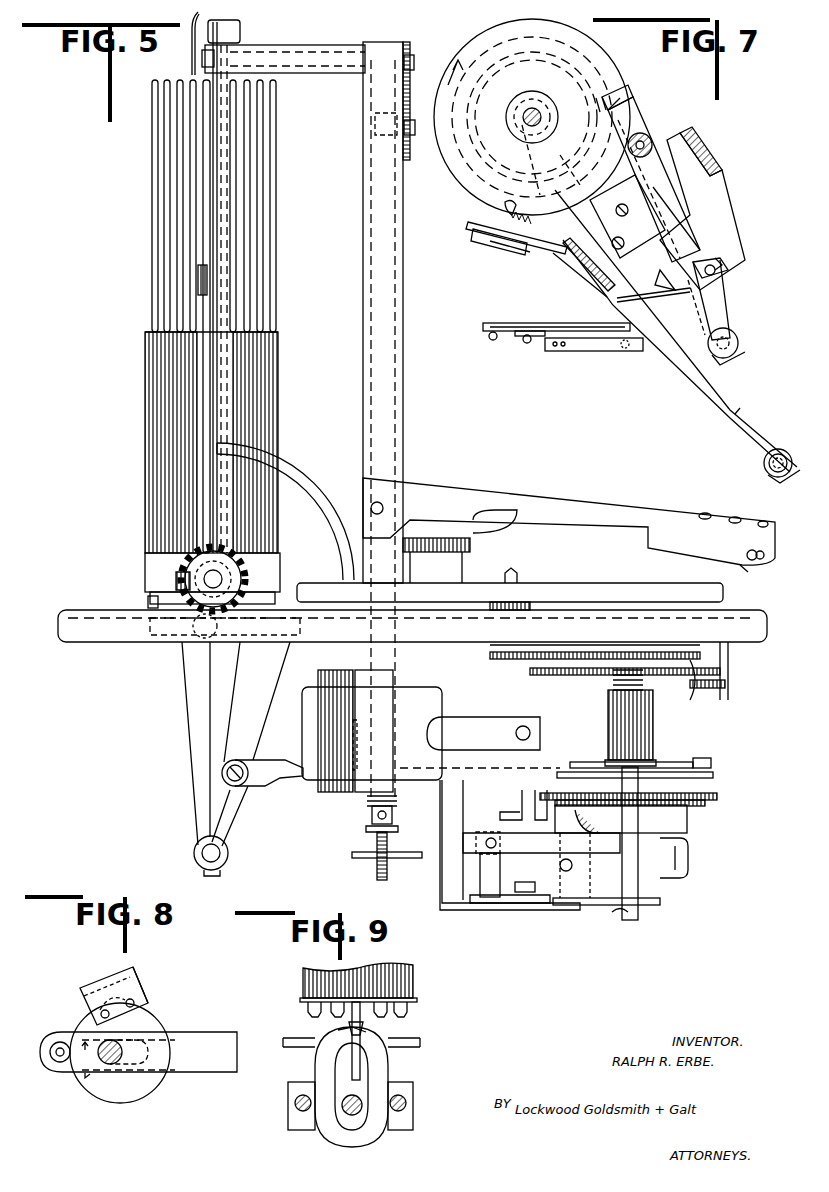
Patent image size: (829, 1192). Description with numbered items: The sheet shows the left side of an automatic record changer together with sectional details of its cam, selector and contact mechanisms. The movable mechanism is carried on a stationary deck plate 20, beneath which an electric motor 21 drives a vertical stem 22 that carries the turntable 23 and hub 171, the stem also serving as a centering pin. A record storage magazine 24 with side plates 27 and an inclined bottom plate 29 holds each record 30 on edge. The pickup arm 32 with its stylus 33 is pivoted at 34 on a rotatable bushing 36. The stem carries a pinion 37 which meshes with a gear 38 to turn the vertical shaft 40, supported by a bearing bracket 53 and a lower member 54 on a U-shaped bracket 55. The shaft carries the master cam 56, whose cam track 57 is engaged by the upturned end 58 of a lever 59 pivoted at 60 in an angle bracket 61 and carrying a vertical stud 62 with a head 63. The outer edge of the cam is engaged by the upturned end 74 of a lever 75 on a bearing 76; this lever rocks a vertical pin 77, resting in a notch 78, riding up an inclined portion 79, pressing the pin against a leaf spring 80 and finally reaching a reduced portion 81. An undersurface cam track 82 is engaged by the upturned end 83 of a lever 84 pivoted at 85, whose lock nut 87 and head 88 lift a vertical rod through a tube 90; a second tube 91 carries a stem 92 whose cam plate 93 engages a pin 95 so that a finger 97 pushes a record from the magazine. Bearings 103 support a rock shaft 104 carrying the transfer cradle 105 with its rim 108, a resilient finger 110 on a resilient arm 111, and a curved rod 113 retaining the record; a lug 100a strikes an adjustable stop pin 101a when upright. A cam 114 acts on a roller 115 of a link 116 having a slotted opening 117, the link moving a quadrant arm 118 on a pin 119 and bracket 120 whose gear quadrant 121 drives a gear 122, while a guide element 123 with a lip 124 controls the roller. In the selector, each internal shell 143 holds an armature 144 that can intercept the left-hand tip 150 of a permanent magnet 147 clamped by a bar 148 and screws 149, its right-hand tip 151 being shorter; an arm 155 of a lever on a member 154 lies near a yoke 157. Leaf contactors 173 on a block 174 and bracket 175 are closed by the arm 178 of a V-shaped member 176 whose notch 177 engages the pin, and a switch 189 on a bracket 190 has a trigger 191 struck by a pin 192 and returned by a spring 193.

In FIG. 5, the deck plate 20 is at (762, 626).
In FIG. 5, the electric motor 21 is at (302, 720).
In FIG. 5, the vertical stem 22 is at (518, 573).
In FIG. 5, the turntable 23 is at (724, 594).
In FIG. 5, the record storage magazine 24 is at (148, 330).
In FIG. 5, the side plates 27 is at (146, 505).
In FIG. 5, the bottom plate 29 is at (150, 556).
In FIG. 5, the record 30 is at (151, 215).
In FIG. 5, the pickup arm 32 is at (570, 492).
In FIG. 5, the stylus 33 is at (748, 568).
In FIG. 5, the pivot 34 is at (383, 505).
In FIG. 5, the rotatable bushing 36 is at (470, 545).
In FIG. 5, the pinion 37 is at (490, 658).
In FIG. 5, the gear 38 is at (705, 655).
In FIG. 5, the vertical shaft 40 is at (640, 888).
In FIG. 8, the vertical shaft 40 is at (100, 1060).
In FIG. 5, the bearing bracket 53 is at (725, 668).
In FIG. 5, the member 54 is at (660, 902).
In FIG. 7, the member 54 is at (568, 248).
In FIG. 5, the U-shaped bracket 55 is at (473, 908).
In FIG. 7, the U-shaped bracket 55 is at (705, 178).
In FIG. 5, the master cam 56 is at (715, 797).
In FIG. 7, the master cam 56 is at (496, 30).
In FIG. 5, the cam track 57 is at (695, 806).
In FIG. 7, the cam track 57 is at (545, 52).
In FIG. 5, the upturned end 58 is at (575, 832).
In FIG. 5, the lever 59 is at (533, 845).
In FIG. 7, the lever 59 is at (708, 218).
In FIG. 5, the pivot 60 is at (490, 838).
In FIG. 7, the pivot 60 is at (695, 148).
In FIG. 5, the angle bracket 61 is at (495, 895).
In FIG. 7, the angle bracket 61 is at (630, 240).
In FIG. 7, the vertical stud 62 is at (732, 338).
In FIG. 7, the head 63 is at (738, 341).
In FIG. 7, the upturned end 74 is at (626, 88).
In FIG. 5, the lever 75 is at (510, 812).
In FIG. 7, the lever 75 is at (640, 115).
In FIG. 5, the bearing 76 is at (522, 790).
In FIG. 7, the bearing 76 is at (650, 138).
In FIG. 7, the vertical pin 77 is at (730, 262).
In FIG. 7, the notch 78 is at (614, 90).
In FIG. 7, the inclined portion 79 is at (604, 95).
In FIG. 7, the leaf spring 80 is at (652, 297).
In FIG. 7, the reduced portion 81 is at (640, 95).
In FIG. 5, the cam track 82 is at (675, 855).
In FIG. 5, the upturned end 83 is at (690, 845).
In FIG. 5, the lever 84 is at (607, 870).
In FIG. 7, the lever 84 is at (665, 345).
In FIG. 7, the pivot 85 is at (616, 214).
In FIG. 5, the lock nut 87 is at (372, 870).
In FIG. 5, the head 88 is at (366, 828).
In FIG. 7, the head 88 is at (782, 448).
In FIG. 5, the tube 90 is at (403, 378).
In FIG. 5, the second tube 91 is at (315, 46).
In FIG. 5, the stem 92 is at (414, 62).
In FIG. 5, the cam plate 93 is at (410, 85).
In FIG. 5, the pin 95 is at (412, 125).
In FIG. 5, the finger 97 is at (207, 170).
In FIG. 5, the lug 100a is at (176, 580).
In FIG. 5, the adjustable stop pin 101a is at (148, 604).
In FIG. 5, the bearings 103 is at (236, 584).
In FIG. 5, the rock shaft 104 is at (246, 555).
In FIG. 5, the transfer cradle 105 is at (227, 380).
In FIG. 5, the rim 108 is at (200, 378).
In FIG. 5, the resilient finger 110 is at (200, 300).
In FIG. 5, the resilient arm 111 is at (198, 20).
In FIG. 5, the curved rod 113 is at (292, 466).
In FIG. 5, the cam 114 is at (700, 762).
In FIG. 8, the cam 114 is at (126, 1108).
In FIG. 5, the roller 115 is at (713, 764).
In FIG. 8, the roller 115 is at (58, 1042).
In FIG. 8, the link 116 is at (198, 1040).
In FIG. 8, the slotted opening 117 is at (138, 1040).
In FIG. 5, the quadrant arm 118 is at (250, 723).
In FIG. 5, the pin 119 is at (202, 855).
In FIG. 5, the bracket 120 is at (193, 770).
In FIG. 5, the gear quadrant 121 is at (210, 640).
In FIG. 5, the gear 122 is at (222, 580).
In FIG. 5, the guide element 123 is at (668, 758).
In FIG. 8, the guide element 123 is at (90, 1000).
In FIG. 8, the lip 124 is at (134, 968).
In FIG. 9, the internal shell 143 is at (410, 970).
In FIG. 9, the armature 144 is at (410, 1010).
In FIG. 9, the permanent magnet 147 is at (371, 1138).
In FIG. 9, the bar 148 is at (298, 1105).
In FIG. 9, the screws 149 is at (410, 1102).
In FIG. 9, the left-hand tip 150 is at (340, 1030).
In FIG. 9, the right-hand tip 151 is at (370, 1032).
In FIG. 9, the member 154 is at (346, 1115).
In FIG. 9, the arm 155 is at (362, 1066).
In FIG. 9, the yoke 157 is at (420, 1040).
In FIG. 5, the hub 171 is at (540, 604).
In FIG. 7, the leaf contactors 173 is at (596, 350).
In FIG. 7, the block 174 is at (505, 340).
In FIG. 7, the bracket 175 is at (548, 325).
In FIG. 7, the V-shaped member 176 is at (730, 292).
In FIG. 7, the notch 177 is at (720, 255).
In FIG. 7, the arm 178 is at (688, 318).
In FIG. 7, the switch 189 is at (488, 248).
In FIG. 7, the bracket 190 is at (470, 228).
In FIG. 7, the trigger 191 is at (495, 209).
In FIG. 7, the pin 192 is at (505, 207).
In FIG. 7, the spring 193 is at (530, 225).